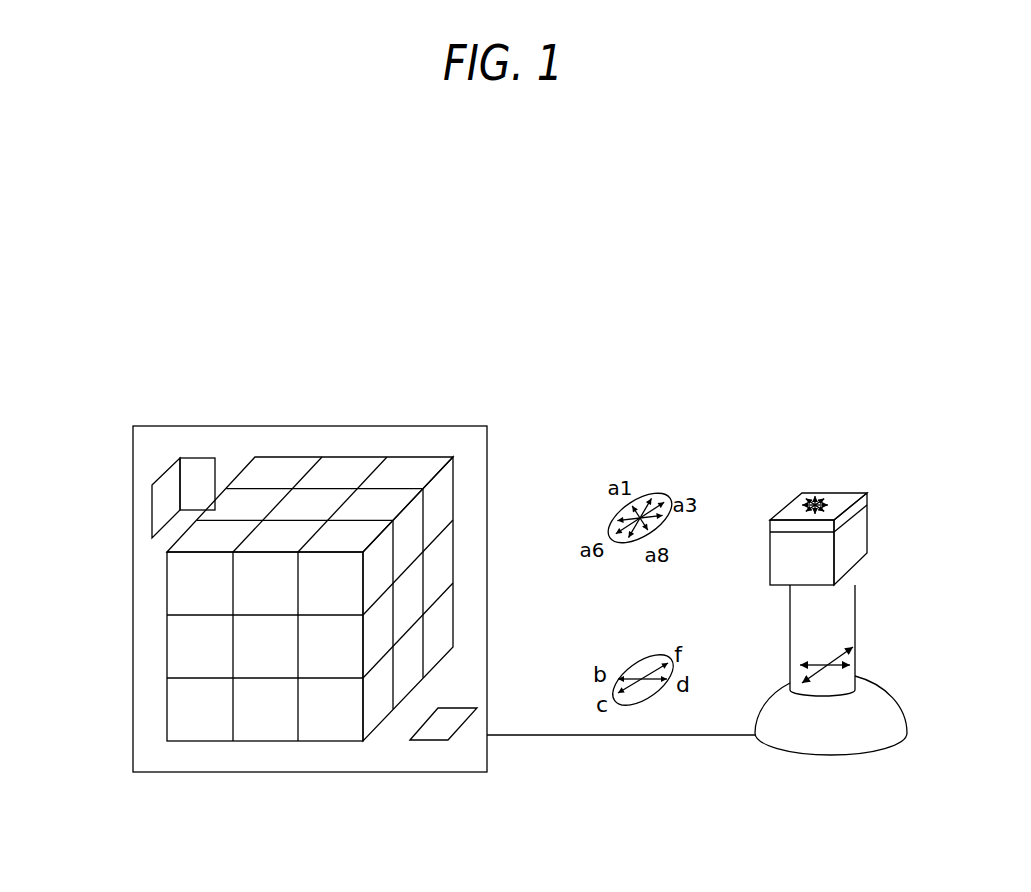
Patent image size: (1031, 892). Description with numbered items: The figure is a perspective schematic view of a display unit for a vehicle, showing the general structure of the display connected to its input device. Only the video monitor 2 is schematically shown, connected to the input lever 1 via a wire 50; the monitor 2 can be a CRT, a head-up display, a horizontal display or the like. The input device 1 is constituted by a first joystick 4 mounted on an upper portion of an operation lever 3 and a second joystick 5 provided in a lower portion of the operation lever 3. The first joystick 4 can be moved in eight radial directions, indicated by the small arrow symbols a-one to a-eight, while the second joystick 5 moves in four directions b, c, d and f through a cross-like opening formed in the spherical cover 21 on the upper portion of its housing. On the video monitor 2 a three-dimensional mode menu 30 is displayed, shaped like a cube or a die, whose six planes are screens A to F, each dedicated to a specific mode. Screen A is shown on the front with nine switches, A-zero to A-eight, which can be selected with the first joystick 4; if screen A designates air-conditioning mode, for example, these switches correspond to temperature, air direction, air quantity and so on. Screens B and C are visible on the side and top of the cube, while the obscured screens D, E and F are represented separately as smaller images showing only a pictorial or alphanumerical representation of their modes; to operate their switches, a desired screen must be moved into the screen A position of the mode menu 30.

The input device 1 is at (875, 554).
The video monitor 2 is at (285, 426).
The operation lever 3 is at (845, 612).
The first joystick 4 is at (857, 533).
The second joystick 5 is at (855, 660).
The spherical cover 21 is at (893, 729).
The three-dimensional mode menu 30 is at (269, 659).
The wire 50 is at (652, 735).
The screen A is at (262, 718).